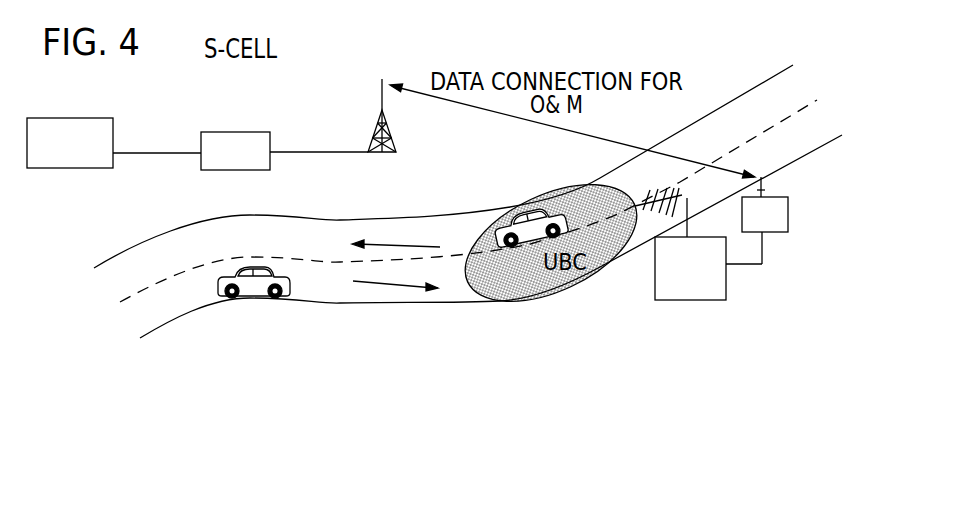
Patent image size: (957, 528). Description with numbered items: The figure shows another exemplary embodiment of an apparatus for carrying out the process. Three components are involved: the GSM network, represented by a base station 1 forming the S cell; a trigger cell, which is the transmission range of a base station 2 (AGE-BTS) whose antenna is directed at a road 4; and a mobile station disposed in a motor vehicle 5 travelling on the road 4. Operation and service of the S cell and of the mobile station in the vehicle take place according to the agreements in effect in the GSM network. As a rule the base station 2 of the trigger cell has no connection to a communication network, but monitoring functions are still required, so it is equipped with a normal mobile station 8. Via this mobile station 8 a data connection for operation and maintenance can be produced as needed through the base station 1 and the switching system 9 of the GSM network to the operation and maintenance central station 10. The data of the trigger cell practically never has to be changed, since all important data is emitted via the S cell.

The base station 1 is at (382, 95).
The base station 2 is at (655, 285).
The road 4 is at (330, 292).
The motor vehicle 5 is at (520, 203).
The mobile station 8 is at (790, 200).
The switching system 9 is at (236, 132).
The operation & maintenance central station 10 is at (110, 124).